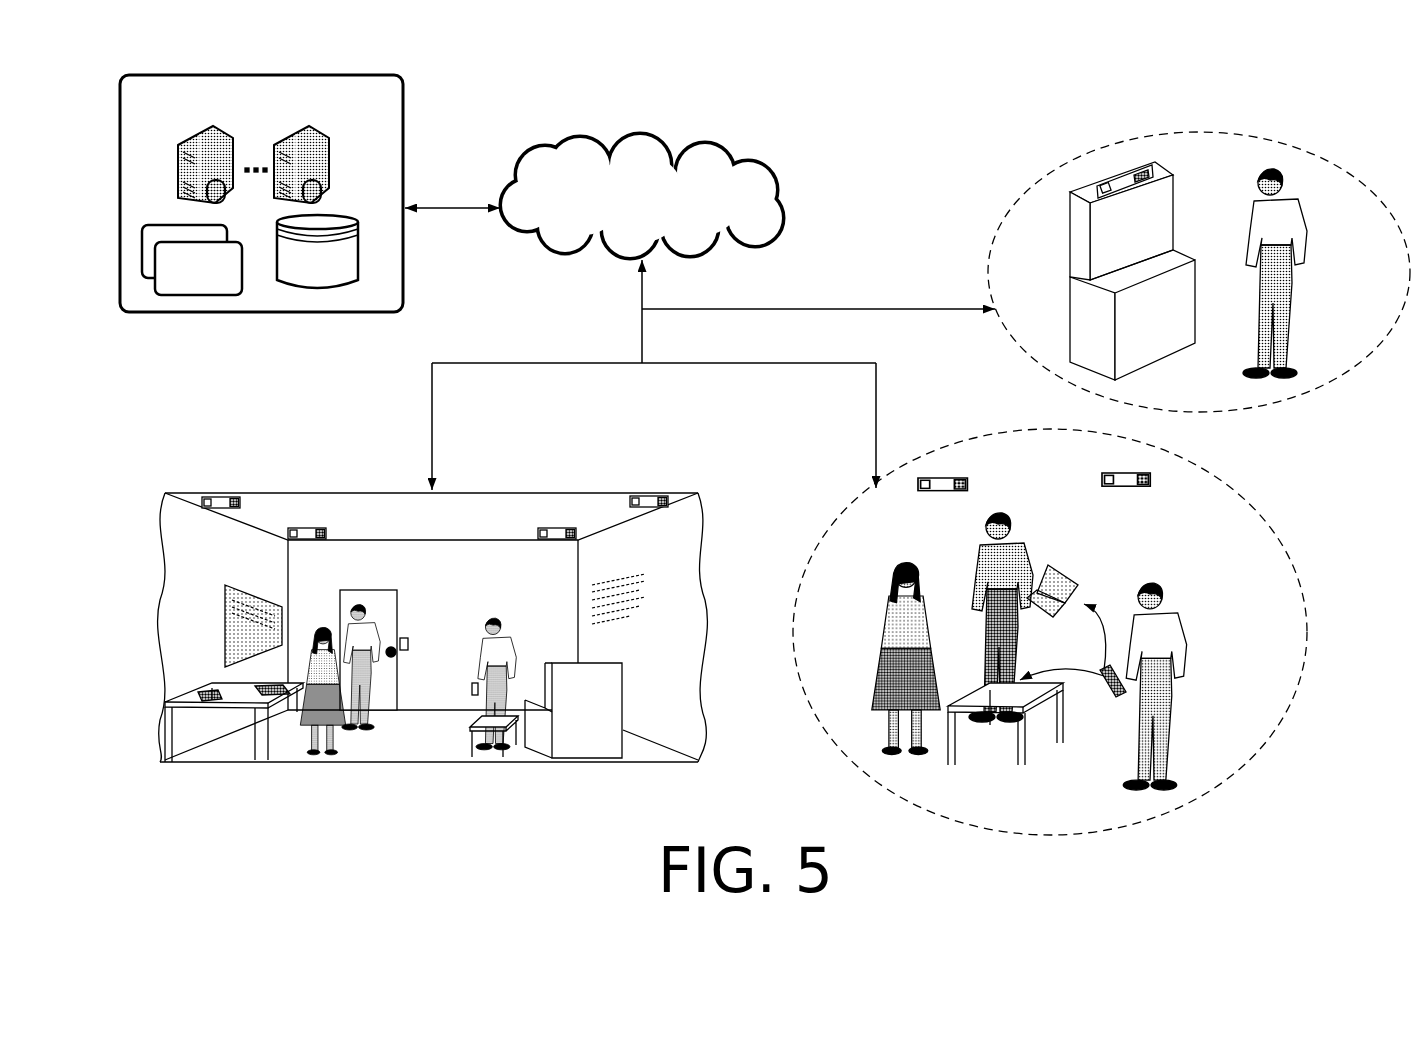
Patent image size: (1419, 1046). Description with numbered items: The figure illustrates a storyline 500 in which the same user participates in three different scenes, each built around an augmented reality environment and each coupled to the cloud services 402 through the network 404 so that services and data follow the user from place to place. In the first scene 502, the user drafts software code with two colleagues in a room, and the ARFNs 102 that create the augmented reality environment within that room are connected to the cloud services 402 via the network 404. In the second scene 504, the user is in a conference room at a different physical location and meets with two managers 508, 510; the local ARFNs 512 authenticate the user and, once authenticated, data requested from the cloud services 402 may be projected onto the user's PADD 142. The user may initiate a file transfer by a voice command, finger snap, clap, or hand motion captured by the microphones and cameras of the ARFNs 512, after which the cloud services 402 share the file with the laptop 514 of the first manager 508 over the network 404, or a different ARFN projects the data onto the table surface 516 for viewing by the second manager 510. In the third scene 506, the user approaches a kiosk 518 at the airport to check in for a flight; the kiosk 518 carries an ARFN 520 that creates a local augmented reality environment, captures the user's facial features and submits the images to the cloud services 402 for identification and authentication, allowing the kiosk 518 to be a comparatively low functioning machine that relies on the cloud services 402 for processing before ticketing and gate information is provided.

The storyline 500 is at (1292, 95).
The cloud services 402 is at (261, 193).
The network 404 is at (642, 196).
The ARFNs 102 is at (648, 497).
The PADD 142 is at (1110, 700).
The first scene 502 is at (478, 786).
The second scene 504 is at (1126, 838).
The scene 506 is at (1026, 372).
The first manager 508 is at (999, 516).
The second manager 510 is at (907, 568).
The local ARFNs 512 is at (1128, 473).
The laptop 514 is at (1072, 578).
The table surface 516 is at (1001, 695).
The kiosk 518 is at (1070, 312).
The ARFN 520 is at (1125, 180).